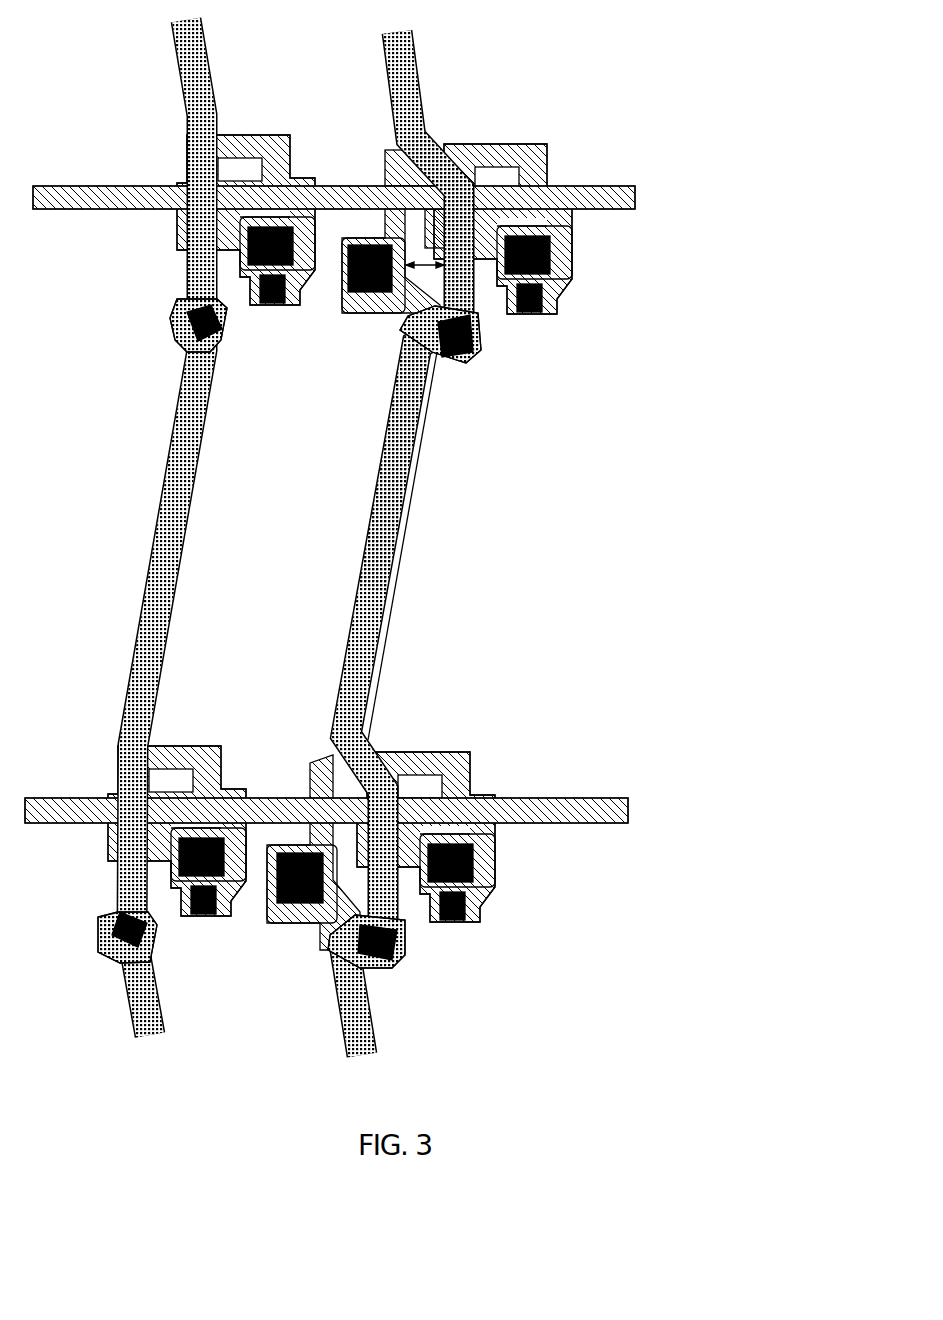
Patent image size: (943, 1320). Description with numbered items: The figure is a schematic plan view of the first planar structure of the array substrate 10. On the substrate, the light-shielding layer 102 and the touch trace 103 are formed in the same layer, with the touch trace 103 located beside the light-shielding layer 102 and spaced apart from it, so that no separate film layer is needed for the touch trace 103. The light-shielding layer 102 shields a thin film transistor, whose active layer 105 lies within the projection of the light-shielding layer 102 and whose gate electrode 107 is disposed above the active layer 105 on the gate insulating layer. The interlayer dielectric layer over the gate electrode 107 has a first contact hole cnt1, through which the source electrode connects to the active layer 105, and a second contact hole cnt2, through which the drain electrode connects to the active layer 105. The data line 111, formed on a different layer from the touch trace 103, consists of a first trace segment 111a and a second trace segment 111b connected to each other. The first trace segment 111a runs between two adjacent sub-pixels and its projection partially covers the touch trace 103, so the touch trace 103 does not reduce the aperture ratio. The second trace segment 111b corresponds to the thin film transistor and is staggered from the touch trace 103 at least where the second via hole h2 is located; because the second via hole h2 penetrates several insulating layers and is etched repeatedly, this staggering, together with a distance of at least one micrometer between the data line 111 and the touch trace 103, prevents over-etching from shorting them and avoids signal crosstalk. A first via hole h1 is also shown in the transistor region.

The array substrate 10 is at (683, 95).
The light-shielding layer 102 is at (487, 181).
The active layer 105 is at (528, 166).
The gate electrode 107 is at (620, 197).
The first via hole h1 is at (566, 250).
The second contact hole cnt2 is at (560, 298).
The data line 111 is at (629, 368).
The first trace segment 111a is at (420, 407).
The second trace segment 111b is at (468, 291).
The touch trace 103 is at (413, 473).
The second via hole h2 is at (355, 278).
The first contact hole cnt1 is at (420, 344).